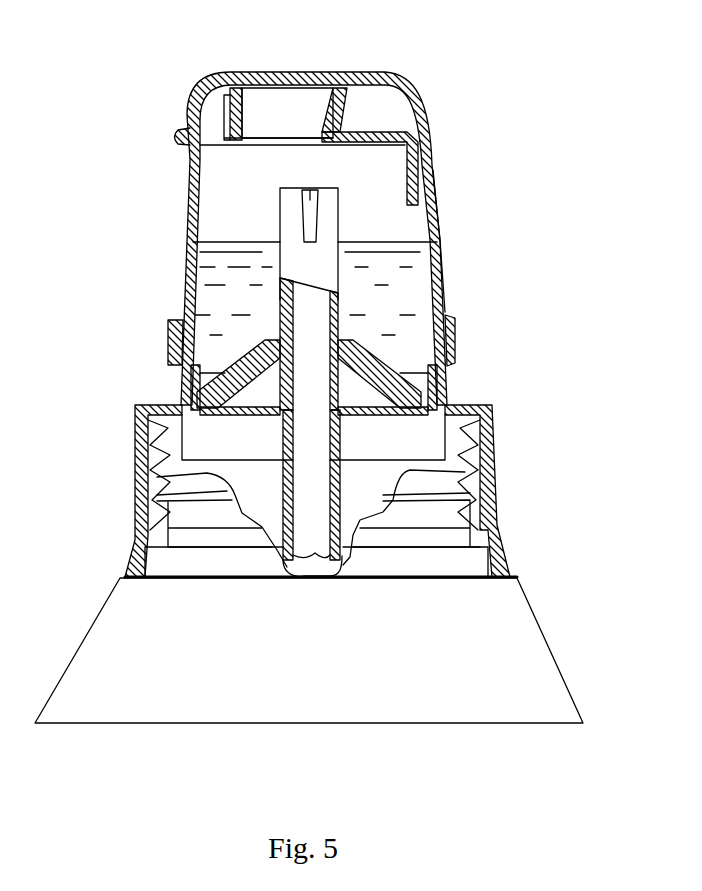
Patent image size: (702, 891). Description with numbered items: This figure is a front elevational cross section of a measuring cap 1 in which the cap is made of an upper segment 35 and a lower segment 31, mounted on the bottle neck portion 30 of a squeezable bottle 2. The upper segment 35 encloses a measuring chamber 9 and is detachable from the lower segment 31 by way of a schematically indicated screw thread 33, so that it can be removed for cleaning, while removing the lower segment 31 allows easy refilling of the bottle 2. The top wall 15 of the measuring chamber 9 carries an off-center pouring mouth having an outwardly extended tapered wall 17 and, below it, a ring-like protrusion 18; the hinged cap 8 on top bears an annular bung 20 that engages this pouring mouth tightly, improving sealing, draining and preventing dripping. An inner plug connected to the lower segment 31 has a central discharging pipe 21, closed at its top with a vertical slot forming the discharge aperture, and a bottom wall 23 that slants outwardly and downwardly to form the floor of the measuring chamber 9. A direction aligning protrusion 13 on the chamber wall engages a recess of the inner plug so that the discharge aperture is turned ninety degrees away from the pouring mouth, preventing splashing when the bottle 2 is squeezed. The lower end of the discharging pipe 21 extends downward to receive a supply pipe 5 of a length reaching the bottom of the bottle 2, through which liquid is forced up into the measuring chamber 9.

The measuring cap 1 is at (574, 263).
The bottle 2 is at (557, 652).
The supply pipe 5 is at (322, 492).
The cap 8 is at (403, 88).
The measuring chamber 9 is at (210, 217).
The direction aligning protrusion 13 is at (448, 392).
The top wall 15 is at (403, 125).
The tapered wall 17 is at (228, 78).
The ring-like protrusion 18 is at (195, 163).
The annular bung 20 is at (312, 95).
The discharging pipe 21 is at (340, 218).
The bottom wall 23 is at (455, 363).
The bottle neck portion 30 is at (500, 505).
The lower segment 31 is at (497, 480).
The screw thread 33 is at (167, 350).
The upper segment 35 is at (440, 270).